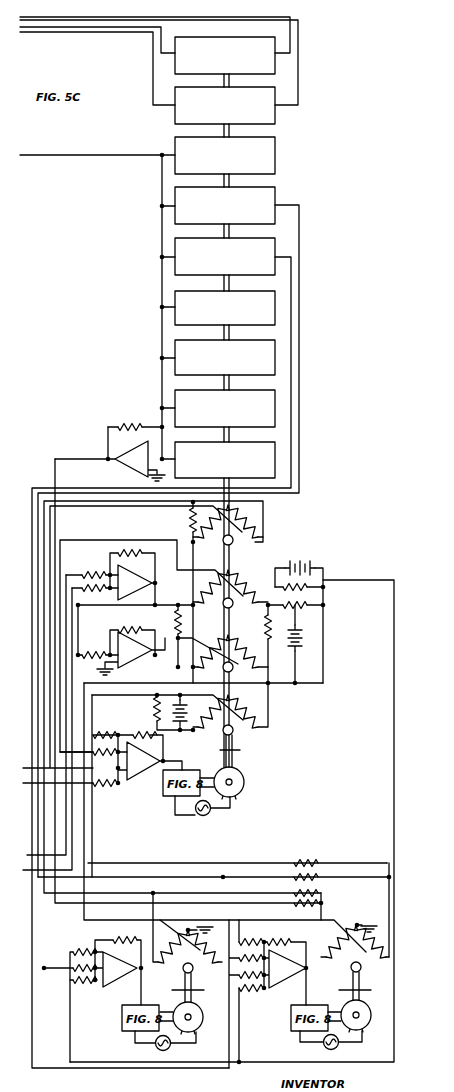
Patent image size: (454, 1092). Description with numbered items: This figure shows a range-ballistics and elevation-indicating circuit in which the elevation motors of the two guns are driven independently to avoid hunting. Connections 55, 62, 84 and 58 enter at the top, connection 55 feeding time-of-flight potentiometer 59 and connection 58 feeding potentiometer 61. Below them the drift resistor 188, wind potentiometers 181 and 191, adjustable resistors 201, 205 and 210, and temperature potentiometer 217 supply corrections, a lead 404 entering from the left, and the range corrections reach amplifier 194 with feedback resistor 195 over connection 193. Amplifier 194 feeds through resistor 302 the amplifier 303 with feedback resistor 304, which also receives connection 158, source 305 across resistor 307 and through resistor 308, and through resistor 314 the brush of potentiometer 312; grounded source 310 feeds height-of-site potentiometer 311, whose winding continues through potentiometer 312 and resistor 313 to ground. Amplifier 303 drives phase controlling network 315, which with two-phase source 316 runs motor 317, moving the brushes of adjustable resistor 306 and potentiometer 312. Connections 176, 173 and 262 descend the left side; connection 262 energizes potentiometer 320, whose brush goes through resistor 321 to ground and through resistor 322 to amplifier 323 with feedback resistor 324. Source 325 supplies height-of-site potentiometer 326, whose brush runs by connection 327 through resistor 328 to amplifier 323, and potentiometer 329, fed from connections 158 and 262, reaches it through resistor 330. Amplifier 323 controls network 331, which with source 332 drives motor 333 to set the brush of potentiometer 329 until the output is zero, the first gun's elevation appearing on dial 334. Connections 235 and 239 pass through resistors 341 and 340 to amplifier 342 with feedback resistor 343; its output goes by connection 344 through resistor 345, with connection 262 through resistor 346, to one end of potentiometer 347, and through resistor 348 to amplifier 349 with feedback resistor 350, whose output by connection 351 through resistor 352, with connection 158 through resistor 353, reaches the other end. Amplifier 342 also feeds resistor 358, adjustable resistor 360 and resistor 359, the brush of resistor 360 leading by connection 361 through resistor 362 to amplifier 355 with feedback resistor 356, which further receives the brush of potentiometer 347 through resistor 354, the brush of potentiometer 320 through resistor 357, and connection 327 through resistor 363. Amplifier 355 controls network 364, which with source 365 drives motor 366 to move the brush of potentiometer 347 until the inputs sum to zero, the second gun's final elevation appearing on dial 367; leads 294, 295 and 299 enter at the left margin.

The connection 55 is at (47, 36).
The signal line 62 is at (75, 31).
The signal line 84 is at (105, 30).
The connection 58 is at (135, 33).
The potentiometer 59 is at (238, 46).
The potentiometer 61 is at (264, 96).
The adjustable resistor 188 is at (270, 153).
The potentiometer 181 is at (270, 200).
The potentiometer 191 is at (270, 250).
The adjustable resistor 201 is at (270, 302).
The adjustable resistor 205 is at (270, 358).
The adjustable resistor 210 is at (270, 410).
The potentiometer 217 is at (270, 460).
The connection 193 is at (162, 331).
The feedback resistor 195 is at (132, 414).
The amplifier 194 is at (125, 466).
The input line 404 is at (50, 157).
The connection 176 is at (32, 520).
The connection 173 is at (38, 535).
The connection 262 is at (44, 548).
The feedback resistor 343 is at (132, 538).
The resistor 321 is at (185, 520).
The potentiometer 320 is at (262, 526).
The resistor 340 is at (92, 567).
The amplifier 342 is at (132, 592).
The resistor 341 is at (92, 594).
The feedback resistor 350 is at (138, 622).
The resistor 348 is at (100, 648).
The amplifier 349 is at (136, 663).
The resistor 358 is at (176, 590).
The resistor 359 is at (194, 638).
The adjustable resistor 360 is at (234, 670).
The potentiometer 312 is at (248, 578).
The source of voltage 325 is at (300, 560).
The potentiometer 326 is at (312, 589).
The potentiometer 311 is at (312, 608).
The resistor 313 is at (265, 628).
The source of voltage 310 is at (306, 648).
The source of voltage 305 is at (180, 683).
The resistor 314 is at (98, 725).
The resistor 307 is at (156, 708).
The resistor 308 is at (103, 745).
The feedback resistor 304 is at (140, 727).
The amplifier 303 is at (146, 768).
The resistor 302 is at (110, 786).
The phase controlling network 315 is at (186, 768).
The two-phase motor 317 is at (244, 780).
The source of two-phase power 316 is at (203, 816).
The adjustable resistor 306 is at (250, 712).
The connection 327 is at (394, 777).
The connection 158 is at (38, 780).
The connection 235 is at (60, 848).
The connection 239 is at (40, 860).
The connection 361 is at (84, 818).
The connection 351 is at (186, 853).
The resistor 352 is at (308, 862).
The resistor 353 is at (292, 877).
The resistor 346 is at (292, 893).
The resistor 345 is at (292, 903).
The connection 344 is at (196, 903).
The line 294 is at (32, 903).
The potentiometer 295 is at (32, 960).
The motor 299 is at (32, 1010).
The resistor 330 is at (70, 950).
The feedback resistor 324 is at (114, 938).
The resistor 322 is at (72, 972).
The resistor 328 is at (80, 986).
The amplifier 323 is at (122, 976).
The dial 334 is at (176, 990).
The potentiometer 329 is at (200, 962).
The two-phase motor 333 is at (198, 1007).
The phase controlling network 331 is at (122, 1026).
The source of two-phase power 332 is at (160, 1051).
The resistor 354 is at (244, 938).
The resistor 362 is at (266, 940).
The feedback resistor 356 is at (284, 936).
The amplifier 355 is at (278, 976).
The resistor 357 is at (264, 990).
The resistor 363 is at (246, 995).
The phase controlling network 364 is at (292, 1028).
The potentiometer 347 is at (346, 958).
The dial 367 is at (370, 976).
The two-phase motor 366 is at (366, 1004).
The source of two-phase power 365 is at (340, 1048).